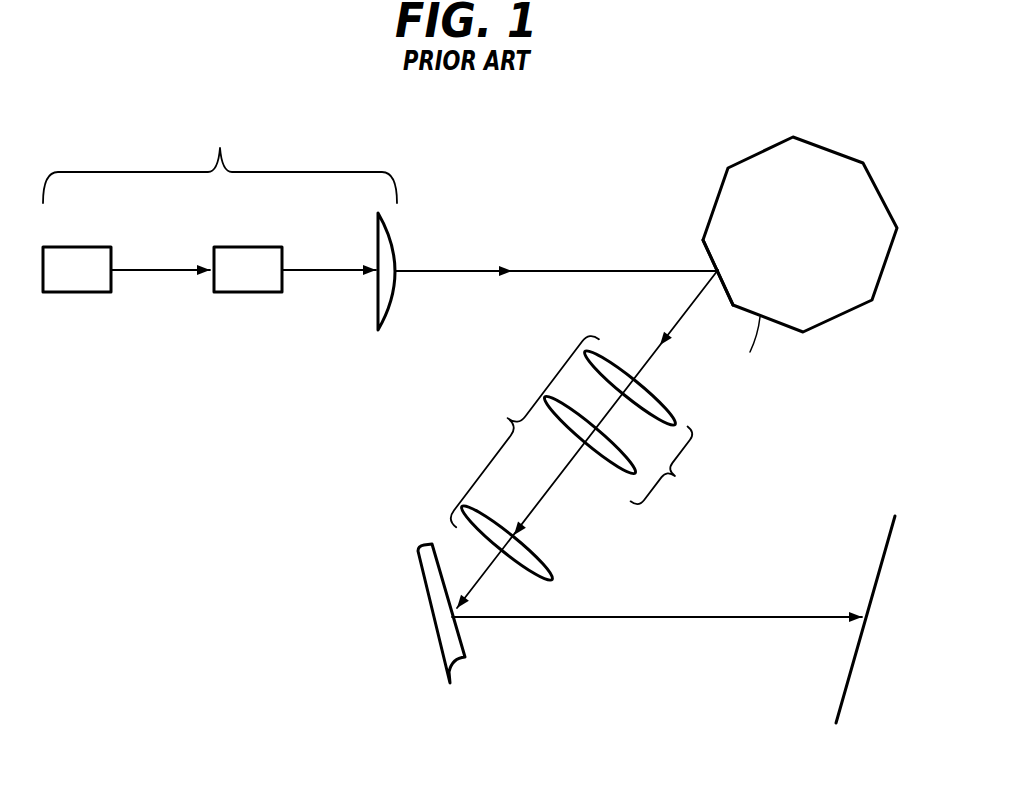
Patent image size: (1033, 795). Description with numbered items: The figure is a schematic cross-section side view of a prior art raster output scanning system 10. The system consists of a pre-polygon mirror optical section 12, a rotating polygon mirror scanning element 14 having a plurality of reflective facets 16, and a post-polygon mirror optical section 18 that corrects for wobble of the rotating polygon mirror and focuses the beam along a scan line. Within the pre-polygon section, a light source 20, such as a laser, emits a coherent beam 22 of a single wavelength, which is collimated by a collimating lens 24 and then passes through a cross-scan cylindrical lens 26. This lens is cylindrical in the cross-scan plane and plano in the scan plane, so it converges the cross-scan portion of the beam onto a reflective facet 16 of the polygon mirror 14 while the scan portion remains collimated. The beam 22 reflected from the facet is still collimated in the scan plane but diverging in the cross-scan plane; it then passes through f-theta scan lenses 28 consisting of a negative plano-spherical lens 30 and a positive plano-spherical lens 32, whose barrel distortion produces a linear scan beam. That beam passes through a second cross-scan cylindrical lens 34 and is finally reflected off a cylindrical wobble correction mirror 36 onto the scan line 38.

The raster output scanning system 10 is at (787, 458).
The pre-polygon mirror optical section 12 is at (237, 135).
The rotating polygon mirror scanning element 14 is at (815, 157).
The reflective facet 16 is at (725, 297).
The post-polygon mirror optical section 18 is at (483, 406).
The light source 20 is at (58, 247).
The coherent beam 22 is at (152, 271).
The collimating lens 24 is at (229, 247).
The cross-scan cylindrical lens 26 is at (398, 286).
The f-theta scan lenses 28 is at (715, 506).
The negative plano-spherical lens 30 is at (672, 403).
The positive plano-spherical lens 32 is at (605, 467).
The cross-scan cylindrical lens 34 is at (547, 565).
The cylindrical wobble correction mirror 36 is at (423, 588).
The scan line 38 is at (870, 583).